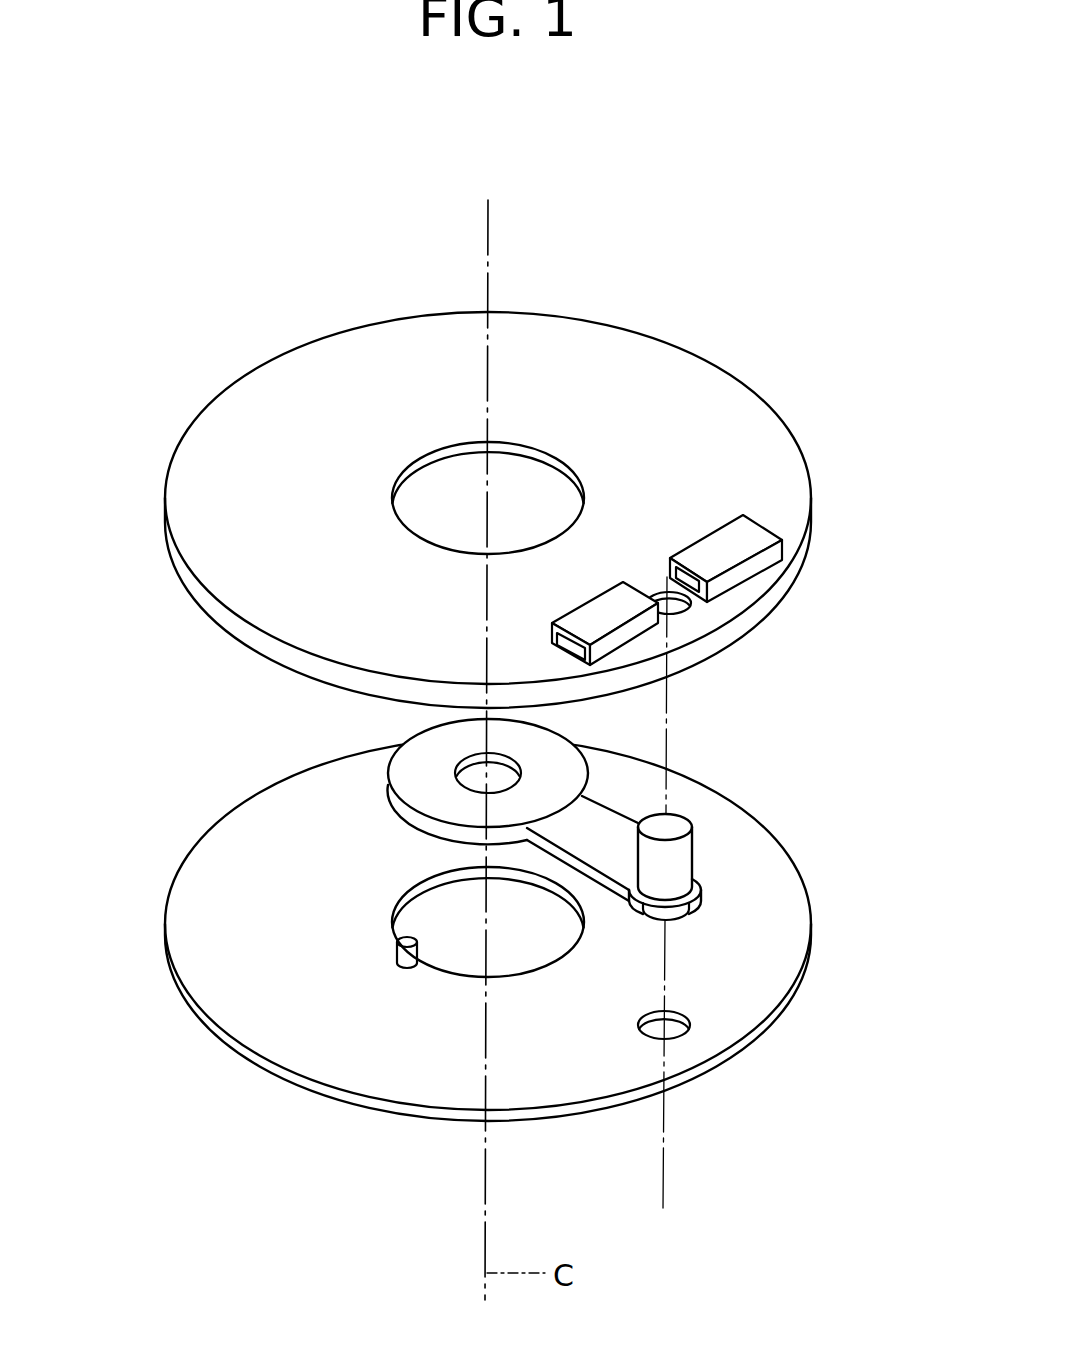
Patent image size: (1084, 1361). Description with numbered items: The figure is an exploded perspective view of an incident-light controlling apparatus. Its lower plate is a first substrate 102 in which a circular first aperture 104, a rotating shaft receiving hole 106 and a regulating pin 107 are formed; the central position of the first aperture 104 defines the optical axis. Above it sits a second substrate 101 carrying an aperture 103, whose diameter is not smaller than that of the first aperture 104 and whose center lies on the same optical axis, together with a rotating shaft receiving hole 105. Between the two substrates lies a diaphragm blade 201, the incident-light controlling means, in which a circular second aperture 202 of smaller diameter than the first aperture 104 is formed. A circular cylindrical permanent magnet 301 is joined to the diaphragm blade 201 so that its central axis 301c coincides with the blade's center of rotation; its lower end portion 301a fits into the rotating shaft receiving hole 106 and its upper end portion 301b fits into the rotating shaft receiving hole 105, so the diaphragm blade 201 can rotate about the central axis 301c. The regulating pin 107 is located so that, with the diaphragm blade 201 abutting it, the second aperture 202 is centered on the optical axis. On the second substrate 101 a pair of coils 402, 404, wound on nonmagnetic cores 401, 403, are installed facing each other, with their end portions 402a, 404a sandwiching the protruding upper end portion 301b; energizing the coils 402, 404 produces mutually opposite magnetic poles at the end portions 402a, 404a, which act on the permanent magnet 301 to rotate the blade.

The second substrate 101 is at (515, 467).
The first substrate 102 is at (462, 974).
The aperture 103 is at (550, 463).
The first aperture 104 is at (453, 957).
The rotating shaft receiving hole 105 is at (675, 611).
The rotating shaft receiving hole 106 is at (670, 1032).
The regulating pin 107 is at (397, 955).
The diaphragm blade 201 is at (516, 893).
The second aperture 202 is at (481, 767).
The permanent magnet 301 is at (784, 893).
The lower end portion 301a is at (687, 920).
The upper end portion 301b is at (682, 848).
The central axis 301c is at (668, 1190).
The core 401 is at (726, 549).
The coil 402 is at (785, 488).
The end portion 402a is at (672, 560).
The core 403 is at (568, 654).
The coil 404 is at (703, 549).
The end portion 404a is at (622, 583).